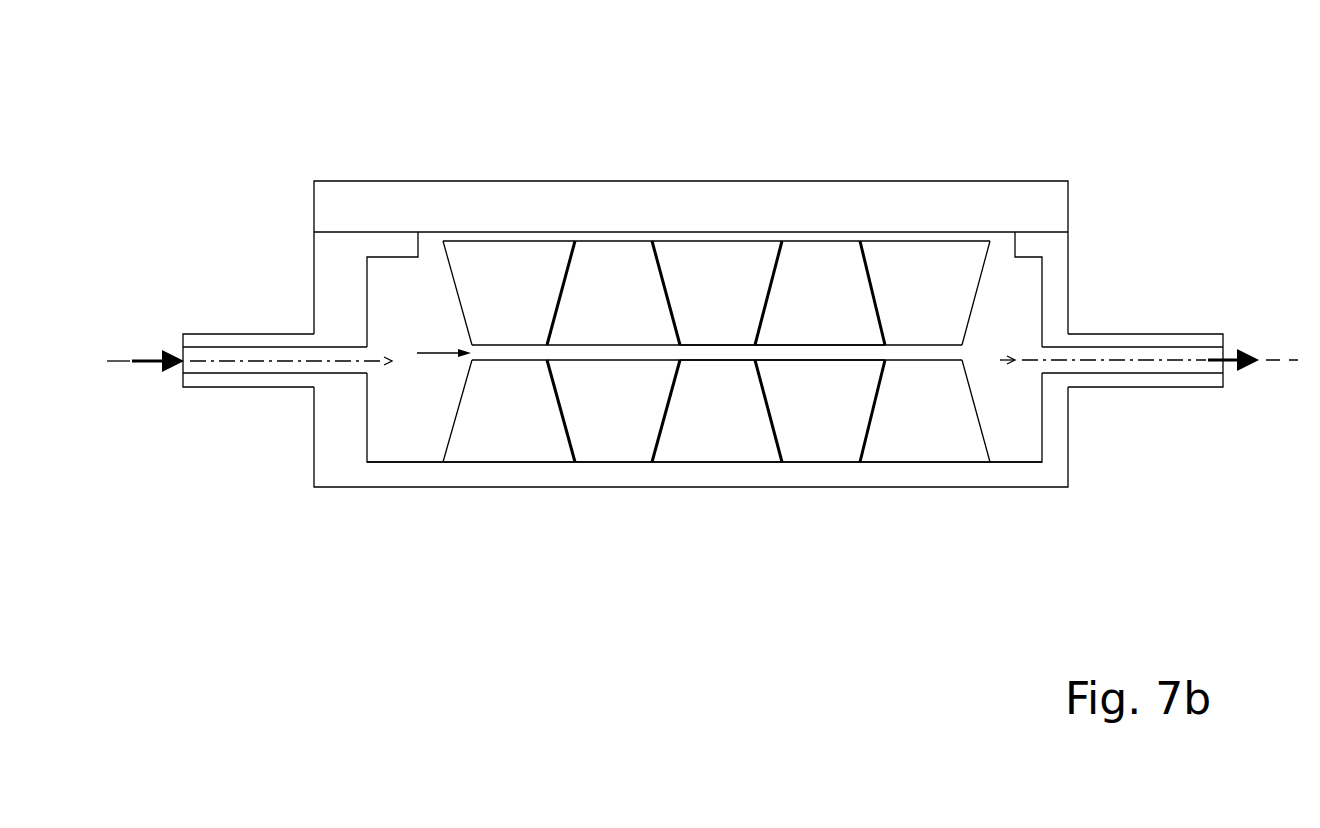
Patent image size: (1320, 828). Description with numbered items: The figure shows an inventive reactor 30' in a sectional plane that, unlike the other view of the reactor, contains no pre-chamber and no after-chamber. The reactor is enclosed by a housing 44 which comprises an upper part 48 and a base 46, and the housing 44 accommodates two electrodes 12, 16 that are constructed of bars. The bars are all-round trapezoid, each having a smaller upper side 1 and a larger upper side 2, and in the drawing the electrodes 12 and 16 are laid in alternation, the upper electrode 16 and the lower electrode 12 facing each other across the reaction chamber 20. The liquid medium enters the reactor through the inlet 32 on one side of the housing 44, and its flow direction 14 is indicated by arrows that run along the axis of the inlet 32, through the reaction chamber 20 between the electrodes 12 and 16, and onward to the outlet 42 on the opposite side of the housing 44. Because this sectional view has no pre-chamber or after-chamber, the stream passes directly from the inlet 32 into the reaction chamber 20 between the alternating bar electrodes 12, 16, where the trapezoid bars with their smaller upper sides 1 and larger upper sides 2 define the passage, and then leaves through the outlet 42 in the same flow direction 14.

The reactor 30' is at (702, 322).
The housing 44 is at (1080, 476).
The upper part 48 is at (923, 207).
The base 46 is at (990, 478).
The inlet 32 is at (243, 334).
The outlet 42 is at (1160, 333).
The flow direction 14 is at (155, 354).
The reaction chamber 20 is at (595, 352).
The electrode 16 is at (500, 277).
The electrode 12 is at (507, 418).
The smaller upper side 1 is at (712, 351).
The larger upper side 2 is at (803, 348).